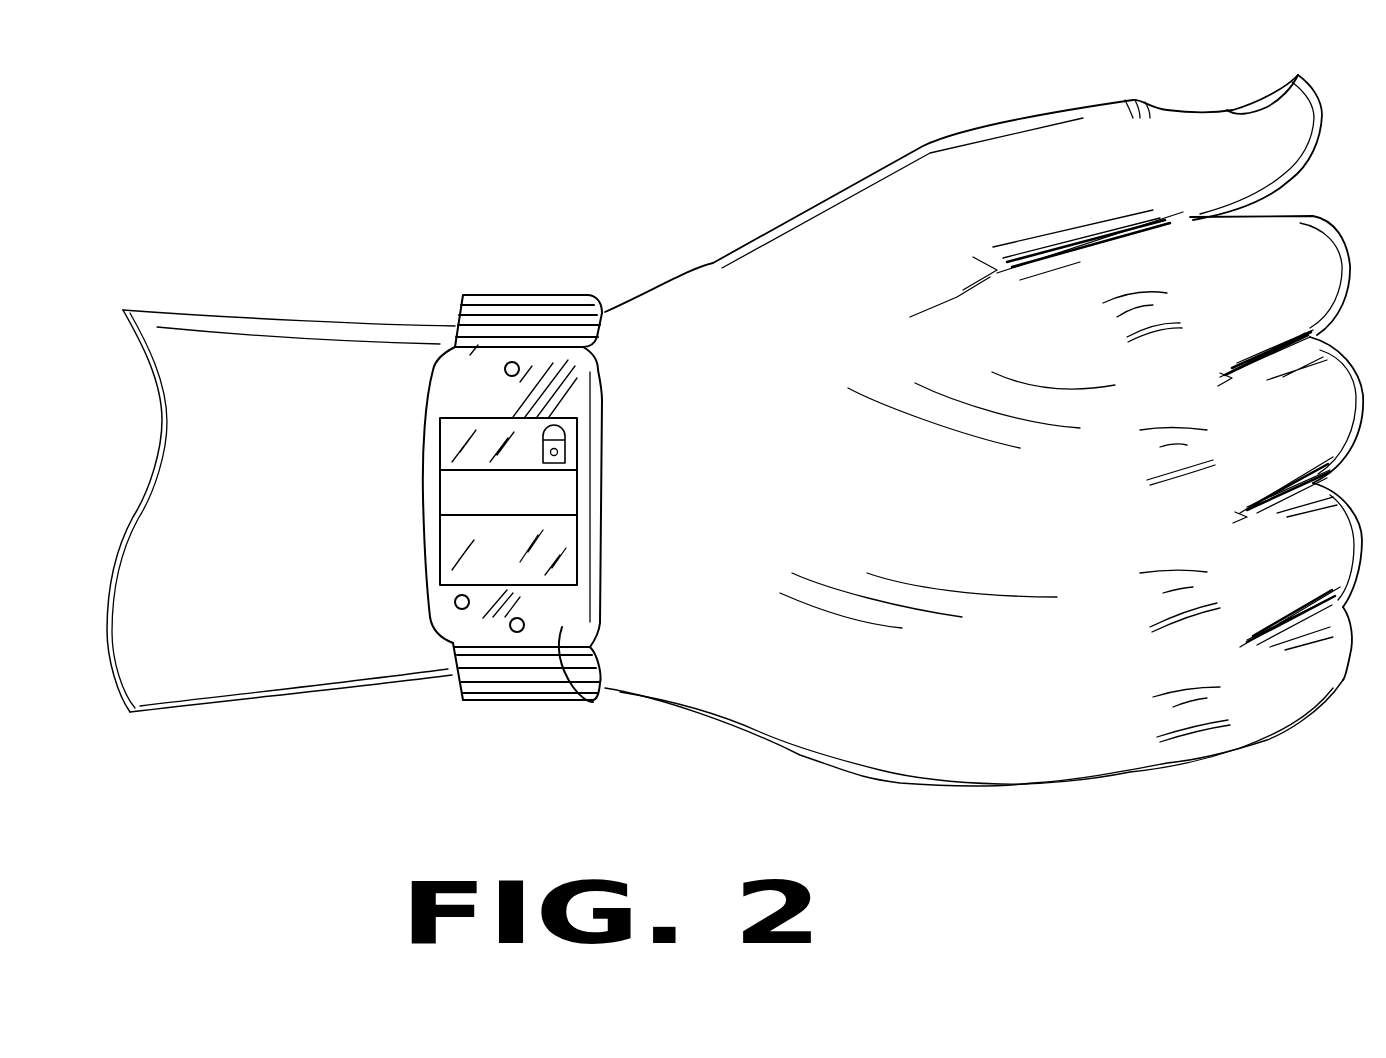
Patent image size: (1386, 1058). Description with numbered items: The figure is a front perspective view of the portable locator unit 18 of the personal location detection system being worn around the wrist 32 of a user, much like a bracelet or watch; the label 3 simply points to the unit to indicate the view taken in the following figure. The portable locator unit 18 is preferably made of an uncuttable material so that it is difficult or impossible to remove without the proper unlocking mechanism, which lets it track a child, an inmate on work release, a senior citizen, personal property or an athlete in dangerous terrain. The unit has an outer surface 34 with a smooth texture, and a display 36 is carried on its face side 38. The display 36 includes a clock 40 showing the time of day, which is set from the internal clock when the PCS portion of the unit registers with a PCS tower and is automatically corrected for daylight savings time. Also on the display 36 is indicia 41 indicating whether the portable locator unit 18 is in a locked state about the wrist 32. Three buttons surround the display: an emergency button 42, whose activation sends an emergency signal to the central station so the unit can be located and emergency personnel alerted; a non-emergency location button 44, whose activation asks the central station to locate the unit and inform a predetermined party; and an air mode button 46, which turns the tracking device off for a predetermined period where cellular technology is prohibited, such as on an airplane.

The view direction arrow 3 is at (655, 218).
The portable locator unit 18 is at (555, 242).
The wrist 32 is at (410, 657).
The outer surface 34 is at (468, 398).
The display 36 is at (567, 440).
The face side 38 is at (593, 702).
The clock 40 is at (567, 497).
The indicia 41 is at (577, 470).
The emergency button 42 is at (519, 366).
The non-emergency location button 44 is at (523, 618).
The air mode button 46 is at (457, 602).